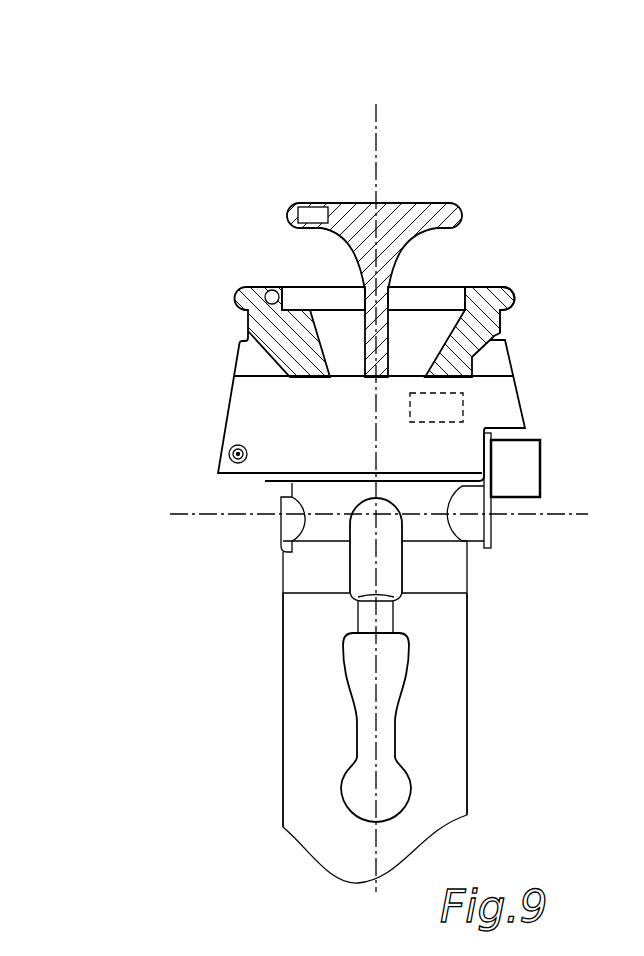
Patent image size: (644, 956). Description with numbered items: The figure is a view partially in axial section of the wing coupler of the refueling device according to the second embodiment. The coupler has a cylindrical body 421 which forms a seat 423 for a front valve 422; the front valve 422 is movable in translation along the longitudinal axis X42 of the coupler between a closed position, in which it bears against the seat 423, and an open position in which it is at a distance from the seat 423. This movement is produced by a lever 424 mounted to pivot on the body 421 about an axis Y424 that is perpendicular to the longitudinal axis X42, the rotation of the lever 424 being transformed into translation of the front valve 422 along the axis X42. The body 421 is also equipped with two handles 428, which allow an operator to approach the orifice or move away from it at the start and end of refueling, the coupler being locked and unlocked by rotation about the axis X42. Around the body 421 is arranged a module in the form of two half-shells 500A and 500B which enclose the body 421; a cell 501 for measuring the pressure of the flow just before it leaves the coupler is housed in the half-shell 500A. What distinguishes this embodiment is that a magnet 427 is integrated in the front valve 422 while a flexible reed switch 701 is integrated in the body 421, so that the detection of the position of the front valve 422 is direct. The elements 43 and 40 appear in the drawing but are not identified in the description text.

The front valve 422 is at (441, 203).
The magnet 427 is at (313, 214).
The cylindrical body 421 is at (505, 287).
The seat 423 is at (456, 302).
The flexible reed switch 701 is at (270, 290).
The half-shell 500A is at (255, 411).
The half-shell 500B is at (518, 352).
The cell 501 is at (456, 410).
The lever 424 is at (477, 522).
The intermediate section 43 is at (458, 608).
The handle 428 is at (395, 668).
The shaft / column 40 is at (467, 783).
The longitudinal axis X42 is at (383, 485).
The pivot axis of the lever Y424 is at (407, 514).